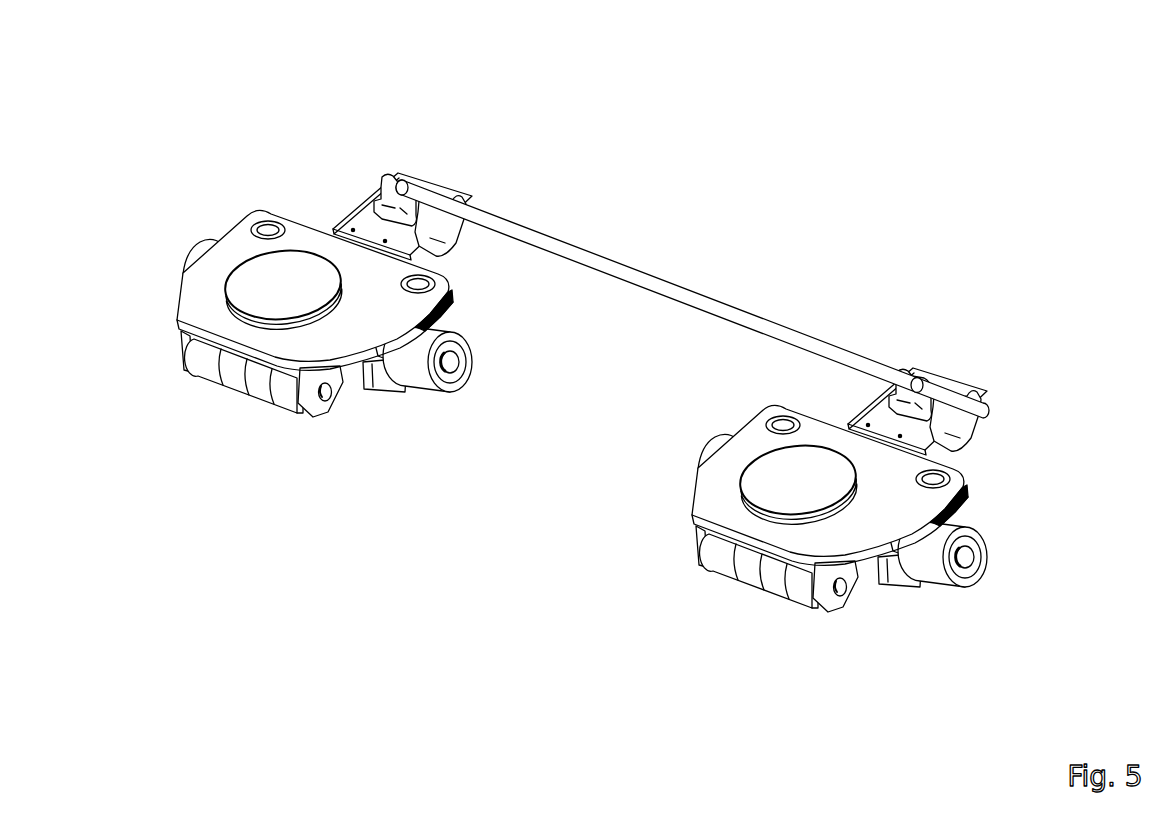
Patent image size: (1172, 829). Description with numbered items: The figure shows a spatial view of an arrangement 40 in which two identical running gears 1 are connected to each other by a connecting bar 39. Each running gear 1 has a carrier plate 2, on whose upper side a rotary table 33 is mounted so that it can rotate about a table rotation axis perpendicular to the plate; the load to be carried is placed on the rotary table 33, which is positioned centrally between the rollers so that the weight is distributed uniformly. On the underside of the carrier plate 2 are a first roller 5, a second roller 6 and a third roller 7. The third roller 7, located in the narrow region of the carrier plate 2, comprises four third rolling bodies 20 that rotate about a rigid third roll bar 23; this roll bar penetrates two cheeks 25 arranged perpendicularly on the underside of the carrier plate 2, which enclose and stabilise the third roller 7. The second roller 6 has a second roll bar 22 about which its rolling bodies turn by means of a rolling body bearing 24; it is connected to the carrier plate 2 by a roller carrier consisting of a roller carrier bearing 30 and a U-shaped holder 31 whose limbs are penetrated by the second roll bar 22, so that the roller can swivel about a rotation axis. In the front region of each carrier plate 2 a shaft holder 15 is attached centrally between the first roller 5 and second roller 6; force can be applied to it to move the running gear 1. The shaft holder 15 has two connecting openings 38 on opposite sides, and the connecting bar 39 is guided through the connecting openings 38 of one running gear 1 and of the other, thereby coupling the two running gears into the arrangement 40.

The running gear 1 is at (582, 389).
The carrier plate 2 is at (176, 298).
The first roller 5 is at (176, 236).
The second roller 6 is at (724, 482).
The third roller 7 is at (473, 505).
The shaft holder 15 is at (352, 181).
The third rolling bodies 20 is at (207, 373).
The second roll bar 22 is at (466, 371).
The third roll bar 23 is at (330, 396).
The rolling body bearing 24 is at (450, 371).
The cheeks 25 is at (488, 501).
The roller carrier bearing 30 is at (458, 311).
The U-shaped holder 31 is at (392, 373).
The rotary table 33 is at (289, 285).
The connecting openings 38 is at (400, 190).
The connecting bar 39 is at (643, 283).
The arrangement 40 is at (582, 386).